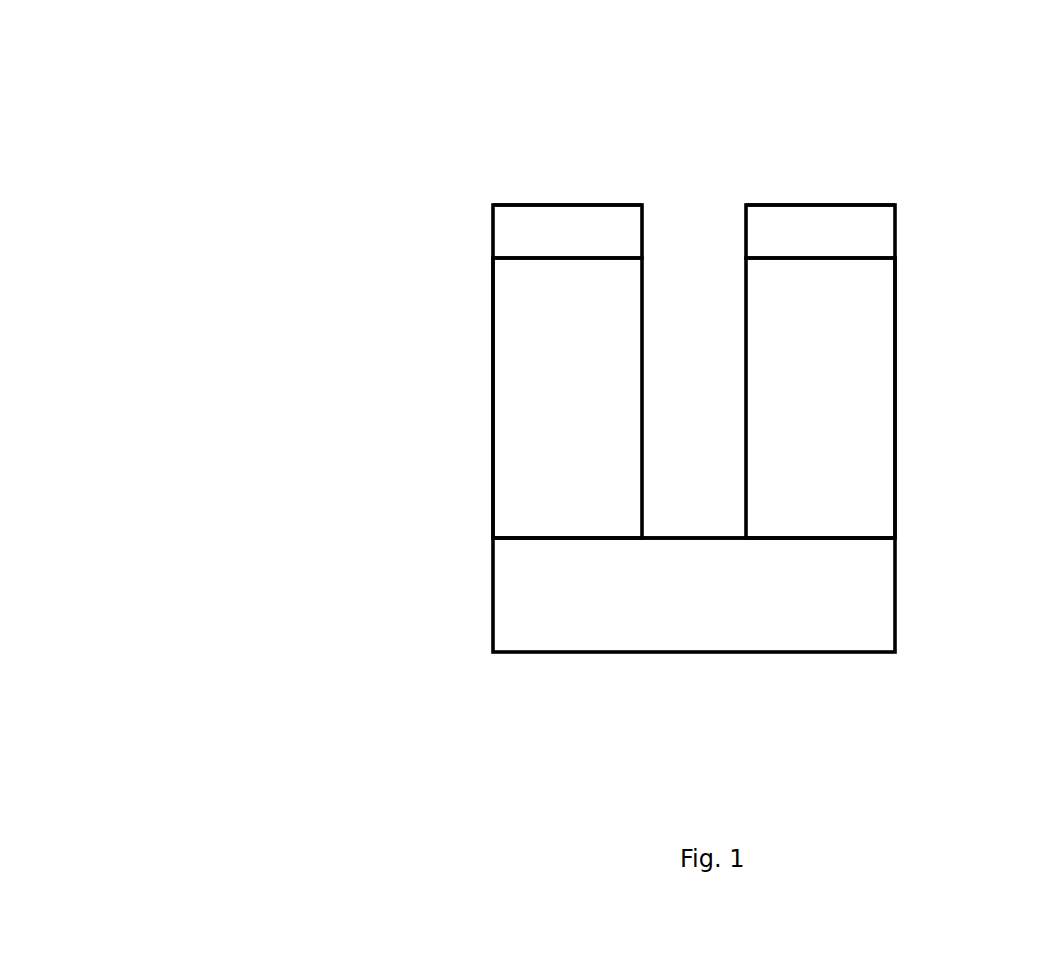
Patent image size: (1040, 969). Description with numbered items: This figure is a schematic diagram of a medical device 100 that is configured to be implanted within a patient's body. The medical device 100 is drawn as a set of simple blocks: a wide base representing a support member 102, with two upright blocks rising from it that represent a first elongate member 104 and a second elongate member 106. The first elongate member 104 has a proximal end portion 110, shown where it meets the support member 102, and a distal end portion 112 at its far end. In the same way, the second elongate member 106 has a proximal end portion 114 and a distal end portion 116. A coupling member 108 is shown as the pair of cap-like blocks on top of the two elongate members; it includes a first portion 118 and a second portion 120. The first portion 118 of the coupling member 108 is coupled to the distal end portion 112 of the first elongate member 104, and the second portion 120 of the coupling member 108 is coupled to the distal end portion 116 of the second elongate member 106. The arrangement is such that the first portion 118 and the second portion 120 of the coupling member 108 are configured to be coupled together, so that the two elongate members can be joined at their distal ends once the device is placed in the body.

The medical device 100 is at (222, 122).
The support member 102 is at (682, 654).
The first elongate member 104 is at (493, 400).
The second elongate member 106 is at (895, 388).
The coupling member 108 is at (493, 222).
The proximal end portion 110 is at (493, 518).
The distal end portion 112 is at (493, 280).
The proximal end portion 114 is at (895, 513).
The distal end portion 116 is at (895, 275).
The first portion 118 is at (577, 228).
The second portion 120 is at (833, 228).